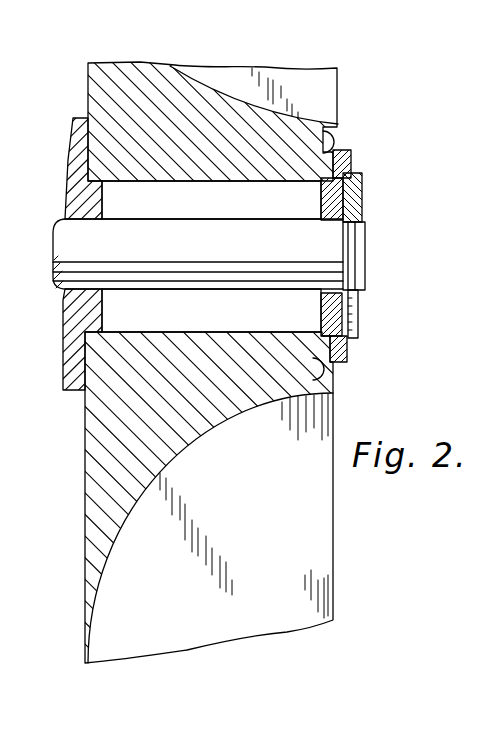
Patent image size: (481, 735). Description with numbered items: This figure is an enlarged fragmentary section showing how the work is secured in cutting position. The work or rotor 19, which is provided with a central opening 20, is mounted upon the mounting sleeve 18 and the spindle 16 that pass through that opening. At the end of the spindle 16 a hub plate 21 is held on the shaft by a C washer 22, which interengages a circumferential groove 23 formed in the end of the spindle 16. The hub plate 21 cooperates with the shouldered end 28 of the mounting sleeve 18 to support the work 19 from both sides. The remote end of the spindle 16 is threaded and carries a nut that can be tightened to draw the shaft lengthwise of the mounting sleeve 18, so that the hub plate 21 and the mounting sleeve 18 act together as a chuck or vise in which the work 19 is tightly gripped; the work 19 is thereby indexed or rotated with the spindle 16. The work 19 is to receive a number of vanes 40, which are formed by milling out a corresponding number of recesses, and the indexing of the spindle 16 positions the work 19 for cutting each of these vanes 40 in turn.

The spindle 16 is at (220, 228).
The mounting sleeve 18 is at (72, 392).
The work 19 is at (132, 65).
The central opening 20 is at (244, 257).
The hub plate 21 is at (352, 165).
The C washer 22 is at (362, 188).
The circumferential groove 23 is at (352, 247).
The shouldered end 28 is at (85, 157).
The vanes 40 is at (318, 563).